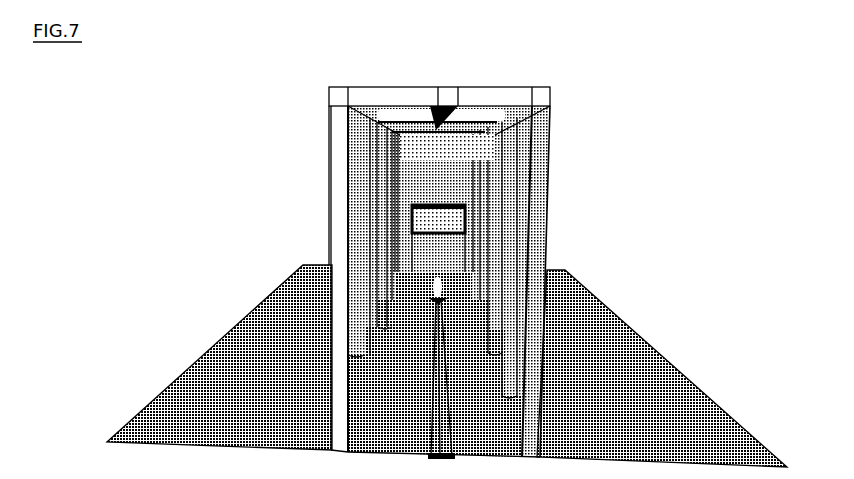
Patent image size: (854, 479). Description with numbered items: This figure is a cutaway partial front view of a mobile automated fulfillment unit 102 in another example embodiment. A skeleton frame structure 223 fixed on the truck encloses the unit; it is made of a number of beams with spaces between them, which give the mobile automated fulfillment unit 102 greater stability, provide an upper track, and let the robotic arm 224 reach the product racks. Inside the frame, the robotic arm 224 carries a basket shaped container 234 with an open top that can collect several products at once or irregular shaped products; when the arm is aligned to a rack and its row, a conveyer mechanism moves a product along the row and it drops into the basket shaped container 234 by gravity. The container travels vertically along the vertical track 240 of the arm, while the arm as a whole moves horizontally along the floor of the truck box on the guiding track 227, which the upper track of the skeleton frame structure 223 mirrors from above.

The mobile automated fulfillment unit 102 is at (708, 80).
The skeleton frame structure 223 is at (566, 112).
The vertical track 240 is at (433, 142).
The basket shaped container 234 is at (430, 203).
The robotic arm 224 is at (402, 230).
The guiding track 227 is at (408, 392).